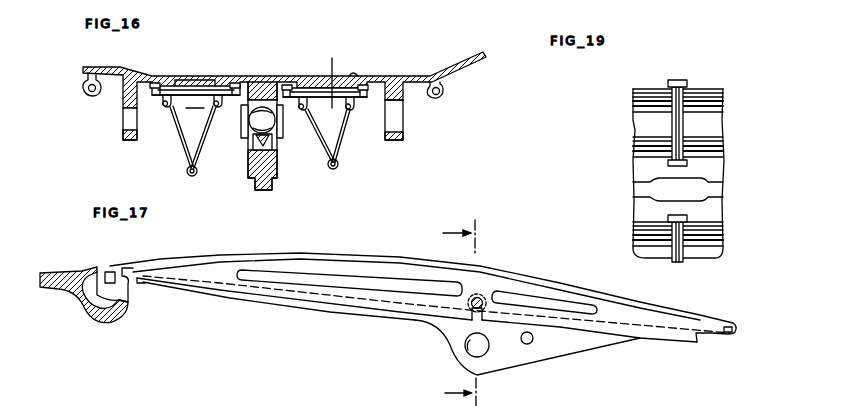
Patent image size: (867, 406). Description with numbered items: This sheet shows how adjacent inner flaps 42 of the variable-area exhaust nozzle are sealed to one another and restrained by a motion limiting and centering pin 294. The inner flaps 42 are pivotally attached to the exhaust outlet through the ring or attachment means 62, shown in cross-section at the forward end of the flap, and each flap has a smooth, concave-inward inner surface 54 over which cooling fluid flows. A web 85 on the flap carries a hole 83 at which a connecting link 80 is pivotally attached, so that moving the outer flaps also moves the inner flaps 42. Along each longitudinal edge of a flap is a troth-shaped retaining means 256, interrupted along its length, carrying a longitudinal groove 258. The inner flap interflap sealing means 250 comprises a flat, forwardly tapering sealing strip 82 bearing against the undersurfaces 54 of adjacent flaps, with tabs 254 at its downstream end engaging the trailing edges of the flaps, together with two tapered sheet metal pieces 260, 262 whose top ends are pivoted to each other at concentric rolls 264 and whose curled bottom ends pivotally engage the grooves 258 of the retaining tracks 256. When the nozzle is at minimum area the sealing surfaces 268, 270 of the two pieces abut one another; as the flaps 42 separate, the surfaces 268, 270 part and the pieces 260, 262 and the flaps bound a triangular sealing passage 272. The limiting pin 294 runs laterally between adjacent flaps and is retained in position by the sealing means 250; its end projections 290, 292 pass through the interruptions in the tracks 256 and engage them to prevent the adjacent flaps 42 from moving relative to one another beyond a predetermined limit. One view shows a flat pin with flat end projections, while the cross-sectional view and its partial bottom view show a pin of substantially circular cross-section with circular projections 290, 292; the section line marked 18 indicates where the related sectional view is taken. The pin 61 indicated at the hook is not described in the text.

In FIG. 17, the turbine section 18 is at (471, 313).
In FIG. 16, the inner flap 42 is at (172, 77).
In FIG. 17, the inner flap 42 is at (255, 253).
In FIG. 19, the inner flap 42 is at (708, 172).
In FIG. 17, the inner surface 54 is at (349, 254).
In FIG. 17, the pivot pin 61 is at (122, 314).
In FIG. 17, the ring or attachment means 62 is at (106, 326).
In FIG. 16, the connecting means or link 80 is at (265, 188).
In FIG. 17, the inner flap interflap sealing strip 82 is at (303, 253).
In FIG. 19, the inner flap interflap sealing strip 82 is at (712, 125).
In FIG. 16, the hole 83 is at (125, 122).
In FIG. 17, the hole 83 is at (470, 350).
In FIG. 16, the web 85 is at (123, 137).
In FIG. 17, the web 85 is at (570, 352).
In FIG. 19, the web 85 is at (712, 190).
In FIG. 16, the inner flap interflap sealing means 250 is at (242, 117).
In FIG. 17, the tab 254 is at (727, 335).
In FIG. 16, the troth-shaped retaining means 256 is at (84, 82).
In FIG. 19, the troth-shaped retaining means 256 is at (640, 88).
In FIG. 16, the longitudinal groove 258 is at (88, 94).
In FIG. 19, the longitudinal groove 258 is at (636, 146).
In FIG. 16, the tapered sheet metal piece 260 is at (186, 141).
In FIG. 16, the tapered sheet metal piece 262 is at (198, 146).
In FIG. 16, the concentric sheet metal rolls 264 is at (189, 173).
In FIG. 16, the sealing surface 268 is at (181, 120).
In FIG. 16, the sealing surface 270 is at (206, 128).
In FIG. 16, the triangular sealing passage 272 is at (269, 75).
In FIG. 16, the projection 290 is at (152, 84).
In FIG. 19, the projection 290 is at (682, 80).
In FIG. 16, the projection 292 is at (248, 84).
In FIG. 19, the projection 292 is at (668, 163).
In FIG. 16, the motion limiting and centering pin 294 is at (196, 84).
In FIG. 17, the motion limiting and centering pin 294 is at (483, 297).
In FIG. 19, the motion limiting and centering pin 294 is at (668, 125).